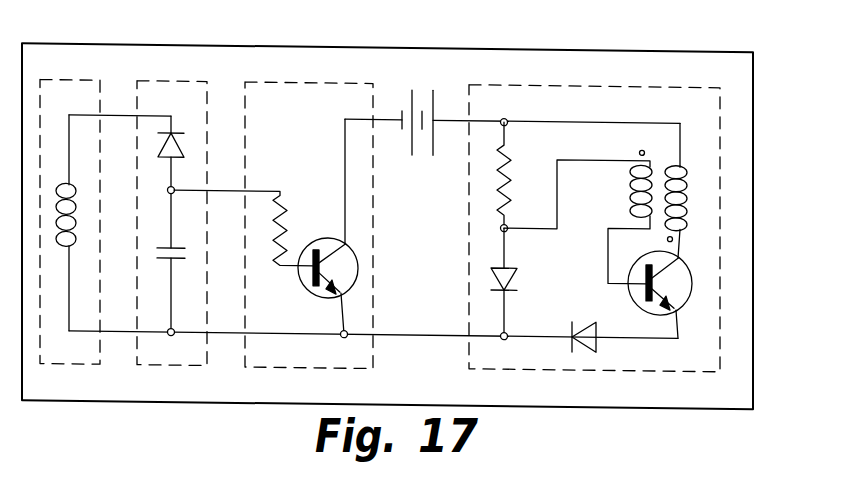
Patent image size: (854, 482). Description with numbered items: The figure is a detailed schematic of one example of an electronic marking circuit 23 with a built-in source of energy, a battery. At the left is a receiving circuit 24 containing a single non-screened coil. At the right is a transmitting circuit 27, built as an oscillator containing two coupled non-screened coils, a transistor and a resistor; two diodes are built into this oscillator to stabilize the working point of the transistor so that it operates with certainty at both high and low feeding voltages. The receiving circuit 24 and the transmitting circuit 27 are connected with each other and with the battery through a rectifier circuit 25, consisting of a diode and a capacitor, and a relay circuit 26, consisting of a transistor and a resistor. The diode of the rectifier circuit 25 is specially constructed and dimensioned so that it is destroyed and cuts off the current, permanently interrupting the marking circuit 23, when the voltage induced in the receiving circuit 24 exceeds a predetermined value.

The electronic marking circuit 23 is at (432, 57).
The receiving circuit 24 is at (55, 88).
The rectifier circuit 25 is at (165, 90).
The relay circuit 26 is at (298, 88).
The transmitting circuit 27 is at (558, 90).